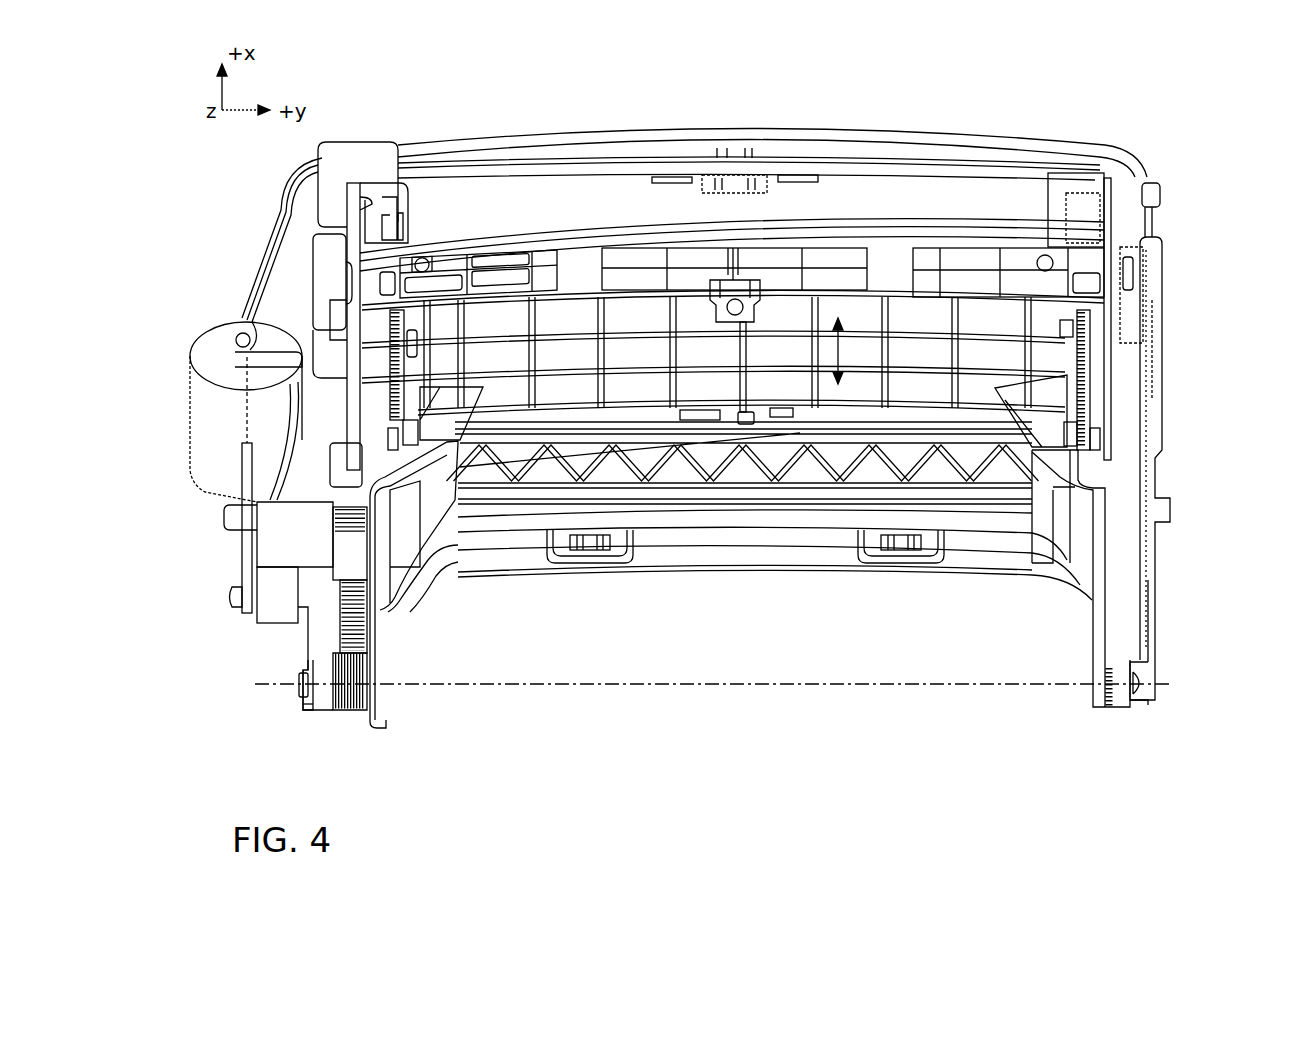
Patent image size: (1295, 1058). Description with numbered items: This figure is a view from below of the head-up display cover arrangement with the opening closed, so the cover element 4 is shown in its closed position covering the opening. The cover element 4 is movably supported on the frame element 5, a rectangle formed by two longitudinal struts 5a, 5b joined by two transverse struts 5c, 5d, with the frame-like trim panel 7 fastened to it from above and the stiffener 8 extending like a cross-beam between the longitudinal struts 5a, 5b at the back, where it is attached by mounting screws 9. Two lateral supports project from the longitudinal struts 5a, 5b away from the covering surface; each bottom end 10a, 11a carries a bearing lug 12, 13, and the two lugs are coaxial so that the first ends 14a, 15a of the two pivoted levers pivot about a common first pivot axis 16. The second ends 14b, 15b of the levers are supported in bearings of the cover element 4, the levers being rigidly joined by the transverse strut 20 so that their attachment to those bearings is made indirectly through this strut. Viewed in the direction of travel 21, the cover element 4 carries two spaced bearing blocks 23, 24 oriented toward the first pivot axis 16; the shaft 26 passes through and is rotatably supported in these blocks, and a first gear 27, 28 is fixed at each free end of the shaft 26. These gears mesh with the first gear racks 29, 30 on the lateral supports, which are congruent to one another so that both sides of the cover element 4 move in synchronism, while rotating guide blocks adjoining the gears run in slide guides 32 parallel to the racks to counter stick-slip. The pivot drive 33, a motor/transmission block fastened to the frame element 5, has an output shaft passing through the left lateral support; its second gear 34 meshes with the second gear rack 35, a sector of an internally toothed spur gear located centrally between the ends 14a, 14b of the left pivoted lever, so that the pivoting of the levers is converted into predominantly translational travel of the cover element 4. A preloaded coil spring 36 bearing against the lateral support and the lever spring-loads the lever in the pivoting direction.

The cover element 4 is at (578, 318).
The frame element 5 is at (1165, 300).
The longitudinal strut 5a is at (327, 255).
The longitudinal strut 5b is at (1152, 343).
The transverse strut 5c is at (712, 555).
The transverse strut 5d is at (697, 197).
The trim panel 7 is at (812, 148).
The stiffener 8 is at (876, 268).
The mounting screw 9 is at (340, 283).
The bottom end of lateral support 10a is at (318, 660).
The bottom end of lateral support 11a is at (1139, 667).
The bearing lug 12 is at (310, 707).
The bearing lug 13 is at (1137, 703).
The first end of pivoted lever 14a is at (376, 700).
The second end of pivoted lever 14b is at (428, 517).
The first end of pivoted lever 15a is at (1098, 699).
The second end of pivoted lever 15b is at (1055, 517).
The first pivot axis 16 is at (710, 690).
The transverse strut 20 is at (835, 472).
The direction of travel 21 is at (840, 345).
The bearing block 23 is at (440, 407).
The bearing block 24 is at (1091, 402).
The shaft 26 is at (775, 430).
The first gear 27 is at (397, 437).
The first gear 28 is at (1087, 437).
The first gear rack 29 is at (397, 345).
The first gear rack 30 is at (1085, 383).
The slide guide 32 is at (378, 397).
The pivot drive 33 is at (234, 430).
The second gear 34 is at (343, 527).
The second gear rack 35 is at (352, 620).
The coil spring 36 is at (345, 700).